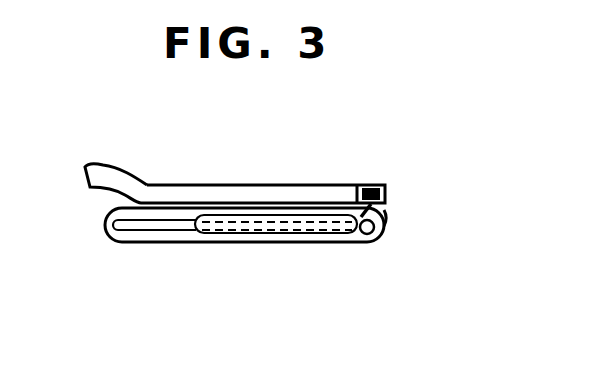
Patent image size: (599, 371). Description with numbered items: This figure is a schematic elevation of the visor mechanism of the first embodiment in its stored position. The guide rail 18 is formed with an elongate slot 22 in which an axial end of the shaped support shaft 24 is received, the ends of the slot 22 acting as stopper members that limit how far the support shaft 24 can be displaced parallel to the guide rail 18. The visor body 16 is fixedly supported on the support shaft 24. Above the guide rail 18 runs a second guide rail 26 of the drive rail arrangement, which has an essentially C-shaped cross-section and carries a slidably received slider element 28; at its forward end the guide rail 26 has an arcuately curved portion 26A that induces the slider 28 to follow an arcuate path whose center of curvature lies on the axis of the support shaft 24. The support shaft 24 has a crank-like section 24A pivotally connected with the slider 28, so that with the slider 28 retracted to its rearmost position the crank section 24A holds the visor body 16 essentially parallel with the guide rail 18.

The visor body 16 is at (282, 235).
The guide rail 18 is at (140, 244).
The elongate slot 22 is at (185, 229).
The support shaft 24 is at (358, 233).
The crank-like section 24A is at (382, 212).
The guide rail 26 is at (248, 184).
The arcuately curved portion 26A is at (138, 184).
The slider element 28 is at (365, 186).